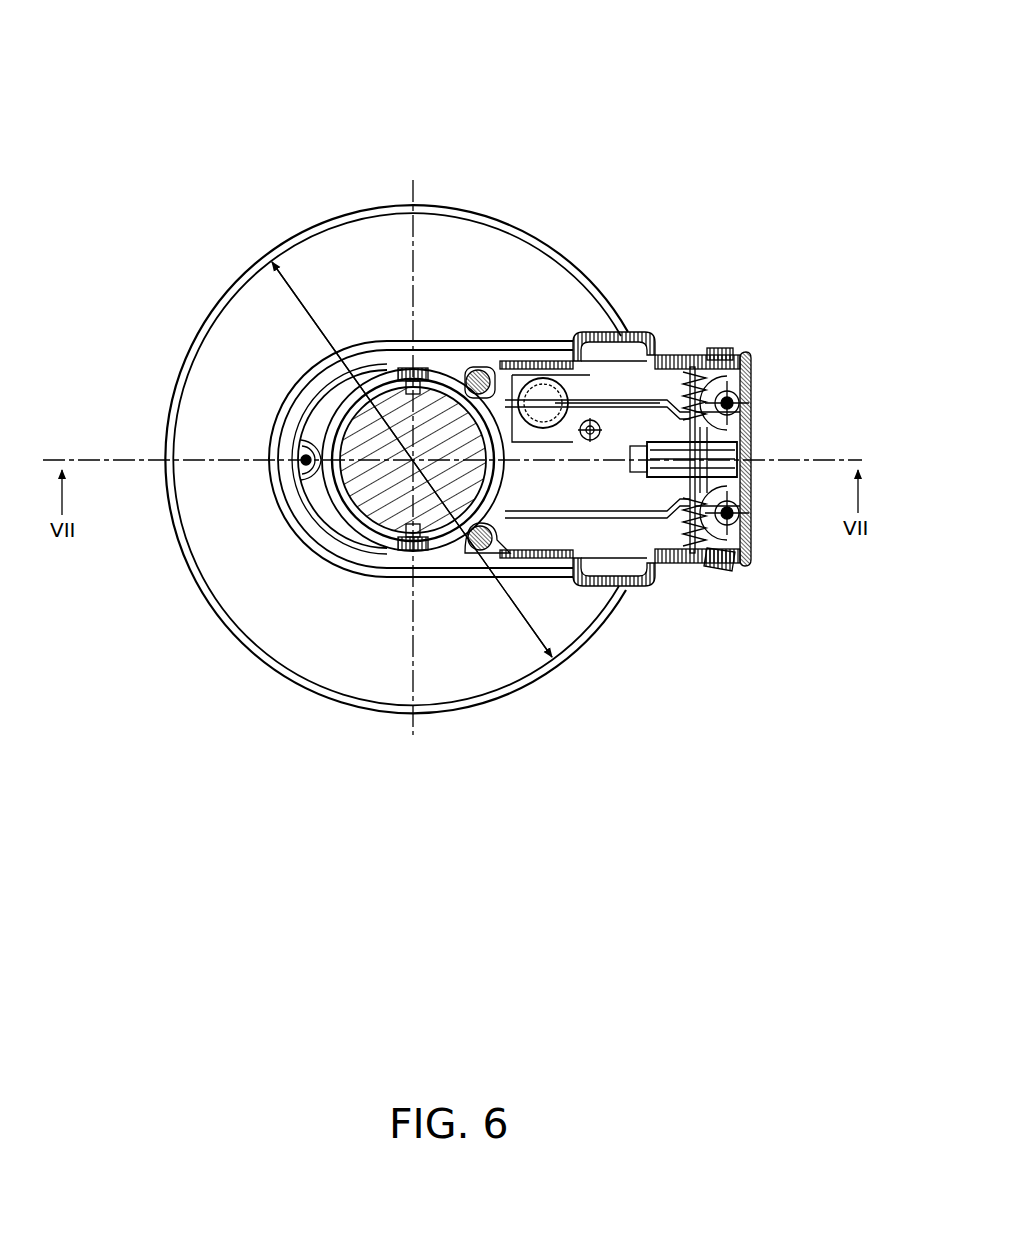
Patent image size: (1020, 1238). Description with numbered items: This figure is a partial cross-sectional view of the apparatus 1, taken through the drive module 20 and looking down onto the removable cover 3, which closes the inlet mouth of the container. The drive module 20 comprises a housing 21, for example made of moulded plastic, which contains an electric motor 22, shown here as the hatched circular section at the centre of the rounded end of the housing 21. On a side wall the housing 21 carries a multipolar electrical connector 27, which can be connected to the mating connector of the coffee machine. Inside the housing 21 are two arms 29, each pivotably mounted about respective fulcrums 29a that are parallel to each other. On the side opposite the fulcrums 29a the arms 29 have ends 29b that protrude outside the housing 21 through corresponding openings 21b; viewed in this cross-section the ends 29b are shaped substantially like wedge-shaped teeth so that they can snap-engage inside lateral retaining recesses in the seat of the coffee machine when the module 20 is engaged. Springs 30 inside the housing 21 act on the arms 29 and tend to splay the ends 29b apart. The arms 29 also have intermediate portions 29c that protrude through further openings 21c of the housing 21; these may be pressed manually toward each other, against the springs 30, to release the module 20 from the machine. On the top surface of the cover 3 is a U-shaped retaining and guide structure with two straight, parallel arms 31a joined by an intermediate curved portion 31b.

The apparatus 1 is at (552, 200).
The removable cover 3 is at (337, 657).
The drive module 20 is at (498, 334).
The housing 21 is at (470, 357).
The openings 21b is at (742, 356).
The openings 21c is at (582, 338).
The electric motor 22 is at (355, 498).
The multipolar electrical connector 27 is at (737, 442).
The arms 29 is at (670, 357).
The fulcrums 29a is at (492, 372).
The ends of the arms 29b is at (716, 352).
The intermediate portions 29c is at (634, 340).
The springs 30 is at (683, 392).
The straight arms 31a is at (443, 352).
The intermediate curved portion 31b is at (270, 475).